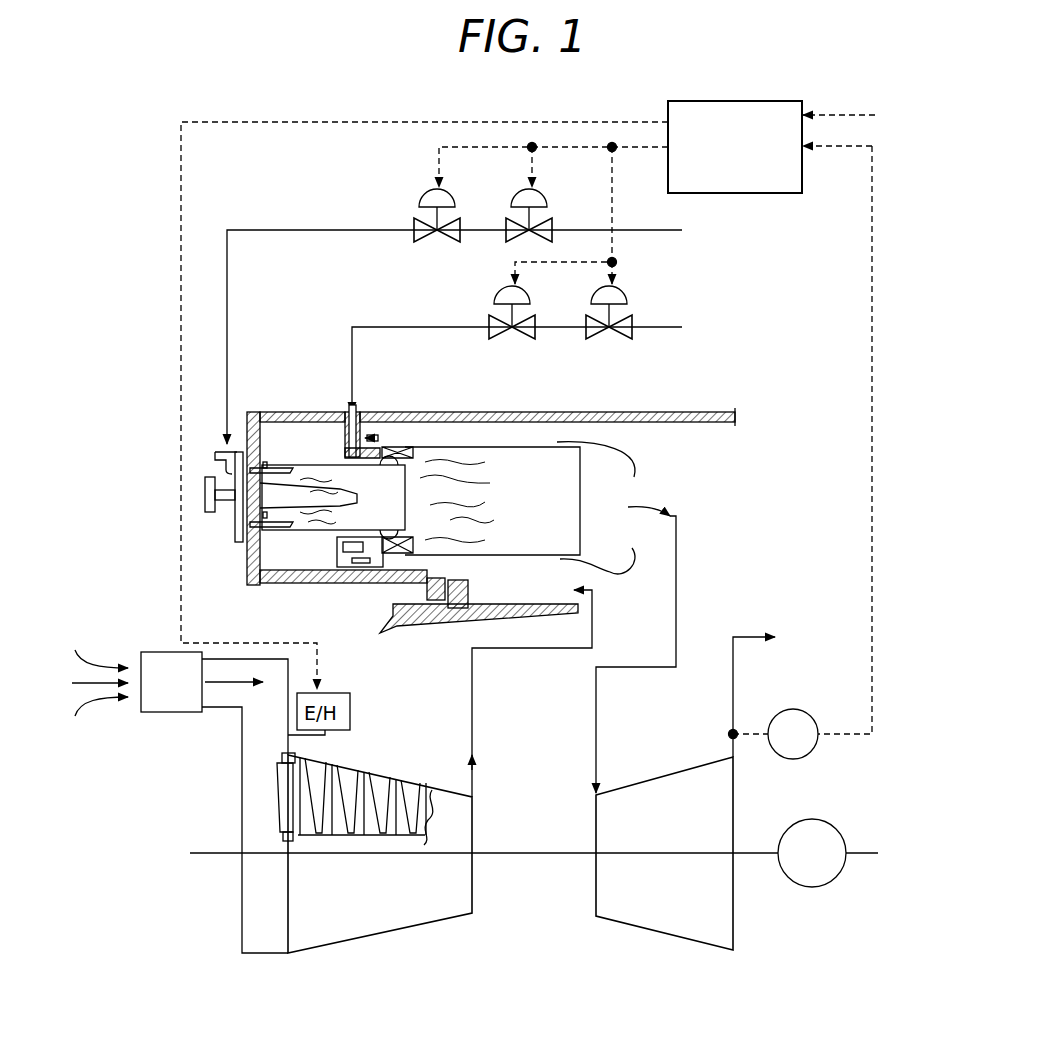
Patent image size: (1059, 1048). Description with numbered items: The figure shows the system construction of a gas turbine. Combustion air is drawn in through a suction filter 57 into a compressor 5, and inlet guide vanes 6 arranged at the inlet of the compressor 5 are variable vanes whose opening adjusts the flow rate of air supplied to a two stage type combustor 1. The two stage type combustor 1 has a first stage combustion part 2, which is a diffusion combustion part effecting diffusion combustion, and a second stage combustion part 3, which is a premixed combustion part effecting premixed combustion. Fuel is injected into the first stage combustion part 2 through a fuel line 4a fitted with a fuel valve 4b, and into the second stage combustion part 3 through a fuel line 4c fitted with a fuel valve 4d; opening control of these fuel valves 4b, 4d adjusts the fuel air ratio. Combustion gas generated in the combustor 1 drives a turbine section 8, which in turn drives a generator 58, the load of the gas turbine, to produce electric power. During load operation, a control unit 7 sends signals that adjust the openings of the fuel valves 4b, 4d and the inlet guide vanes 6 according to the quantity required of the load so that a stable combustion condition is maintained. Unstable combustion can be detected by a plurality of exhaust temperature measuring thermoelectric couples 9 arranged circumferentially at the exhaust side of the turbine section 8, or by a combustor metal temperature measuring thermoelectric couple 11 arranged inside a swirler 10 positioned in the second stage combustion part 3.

The two stage type combustor 1 is at (305, 575).
The first stage combustion part 2 is at (331, 468).
The second stage combustion part 3 is at (471, 472).
The fuel line 4a is at (648, 232).
The fuel valve 4b is at (417, 243).
The fuel line 4c is at (655, 330).
The fuel valve 4d is at (512, 340).
The compressor 5 is at (362, 932).
The inlet guide vanes 6 is at (279, 778).
The control unit 7 is at (752, 101).
The turbine section 8 is at (652, 935).
The exhaust temperature measuring thermoelectric couples 9 is at (812, 752).
The swirler 10 is at (383, 440).
The combustor metal temperature measuring thermoelectric couple 11 is at (419, 460).
The suction filter 57 is at (160, 705).
The generator 58 is at (816, 888).